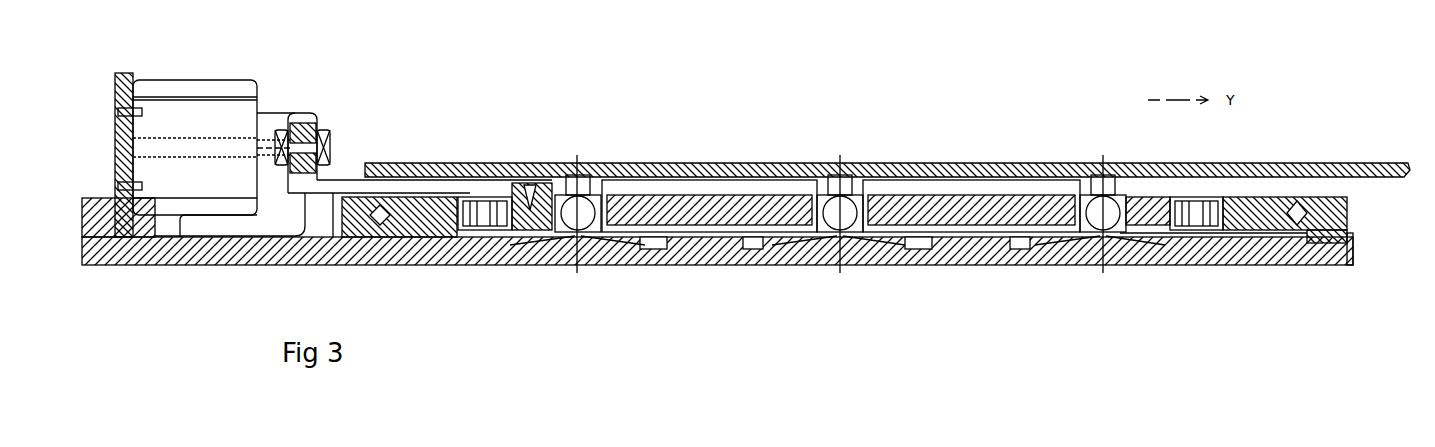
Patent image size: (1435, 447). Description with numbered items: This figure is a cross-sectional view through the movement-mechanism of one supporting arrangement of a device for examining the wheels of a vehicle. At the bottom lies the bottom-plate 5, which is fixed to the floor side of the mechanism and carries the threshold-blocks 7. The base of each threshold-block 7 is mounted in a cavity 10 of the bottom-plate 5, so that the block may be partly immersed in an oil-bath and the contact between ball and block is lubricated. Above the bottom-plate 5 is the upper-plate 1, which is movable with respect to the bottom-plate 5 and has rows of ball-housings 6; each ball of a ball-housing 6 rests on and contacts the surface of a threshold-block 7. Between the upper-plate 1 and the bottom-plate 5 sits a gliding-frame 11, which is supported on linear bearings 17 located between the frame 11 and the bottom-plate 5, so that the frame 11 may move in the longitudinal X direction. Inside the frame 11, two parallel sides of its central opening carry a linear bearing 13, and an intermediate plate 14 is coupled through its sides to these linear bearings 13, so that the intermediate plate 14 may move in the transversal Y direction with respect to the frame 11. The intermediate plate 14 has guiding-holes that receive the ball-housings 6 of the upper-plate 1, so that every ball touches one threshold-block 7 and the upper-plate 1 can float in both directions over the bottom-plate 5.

The upper-plate 1 is at (703, 177).
The bottom-plate 5 is at (702, 250).
The ball-housing 6 is at (557, 233).
The threshold-block 7 is at (847, 248).
The cavity 10 is at (493, 248).
The gliding-frame 11 is at (1282, 207).
The linear bearing 13 is at (1184, 210).
The intermediate plate 14 is at (895, 210).
The linear bearing 17 is at (380, 223).